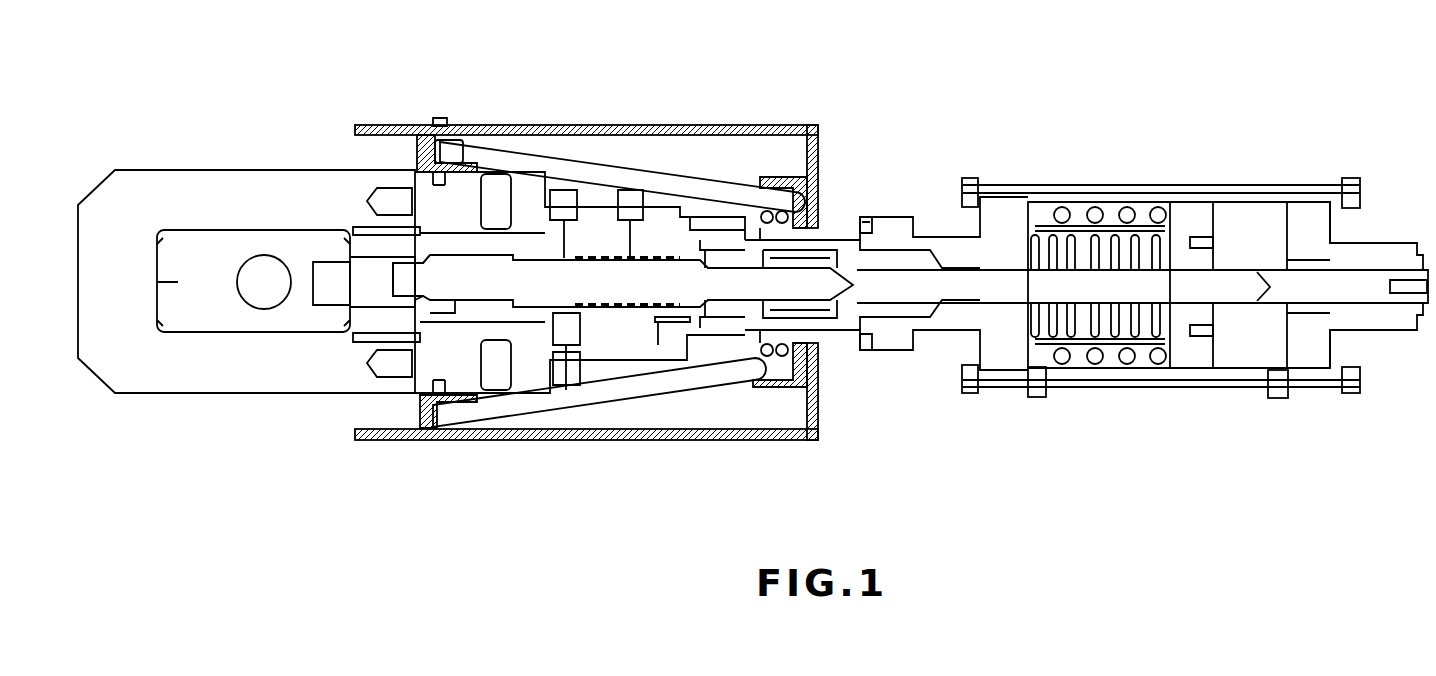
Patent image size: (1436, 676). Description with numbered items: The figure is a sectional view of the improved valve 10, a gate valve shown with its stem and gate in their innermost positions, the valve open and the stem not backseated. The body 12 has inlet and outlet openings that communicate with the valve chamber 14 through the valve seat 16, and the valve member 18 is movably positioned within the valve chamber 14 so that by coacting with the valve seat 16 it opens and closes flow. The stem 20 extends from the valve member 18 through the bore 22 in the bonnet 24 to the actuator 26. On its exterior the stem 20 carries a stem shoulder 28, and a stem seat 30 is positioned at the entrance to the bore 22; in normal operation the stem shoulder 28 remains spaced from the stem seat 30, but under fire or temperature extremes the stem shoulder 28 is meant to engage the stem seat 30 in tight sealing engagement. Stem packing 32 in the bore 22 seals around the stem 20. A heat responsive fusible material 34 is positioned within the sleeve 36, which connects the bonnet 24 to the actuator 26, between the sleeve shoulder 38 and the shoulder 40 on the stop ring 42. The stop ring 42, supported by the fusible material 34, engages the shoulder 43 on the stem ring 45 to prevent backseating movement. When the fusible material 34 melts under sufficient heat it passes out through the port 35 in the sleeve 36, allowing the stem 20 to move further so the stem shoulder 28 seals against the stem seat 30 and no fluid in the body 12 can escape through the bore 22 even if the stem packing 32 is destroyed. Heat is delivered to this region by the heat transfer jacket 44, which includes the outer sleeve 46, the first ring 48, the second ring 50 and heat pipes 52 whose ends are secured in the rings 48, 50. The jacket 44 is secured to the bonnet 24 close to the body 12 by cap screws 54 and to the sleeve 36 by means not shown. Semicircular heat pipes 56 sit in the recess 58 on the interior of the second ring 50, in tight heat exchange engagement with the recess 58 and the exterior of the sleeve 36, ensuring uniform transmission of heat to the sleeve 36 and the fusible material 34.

The valve 10 is at (226, 71).
The body 12 is at (150, 393).
The valve chamber 14 is at (360, 240).
The valve seat 16 is at (266, 308).
The valve member 18 is at (356, 325).
The stem 20 is at (432, 260).
The bore 22 is at (555, 296).
The bonnet 24 is at (465, 135).
The actuator 26 is at (1150, 185).
The stem shoulder 28 is at (455, 303).
The stem seat 30 is at (512, 258).
The stem packing 32 is at (636, 258).
The fusible material 34 is at (808, 215).
The port 35 is at (745, 358).
The sleeve 36 is at (852, 225).
The sleeve shoulder 38 is at (803, 235).
The shoulder 40 is at (770, 208).
The stop ring 42 is at (828, 335).
The shoulder 43 is at (784, 252).
The heat transfer jacket 44 is at (814, 125).
The stem ring 45 is at (718, 300).
The outer sleeve 46 is at (576, 125).
The first ring 48 is at (496, 104).
The second ring 50 is at (818, 146).
The heat pipes 52 is at (670, 166).
The cap screws 54 is at (440, 118).
The semicircular heat pipes 56 is at (778, 356).
The recess 58 is at (750, 365).